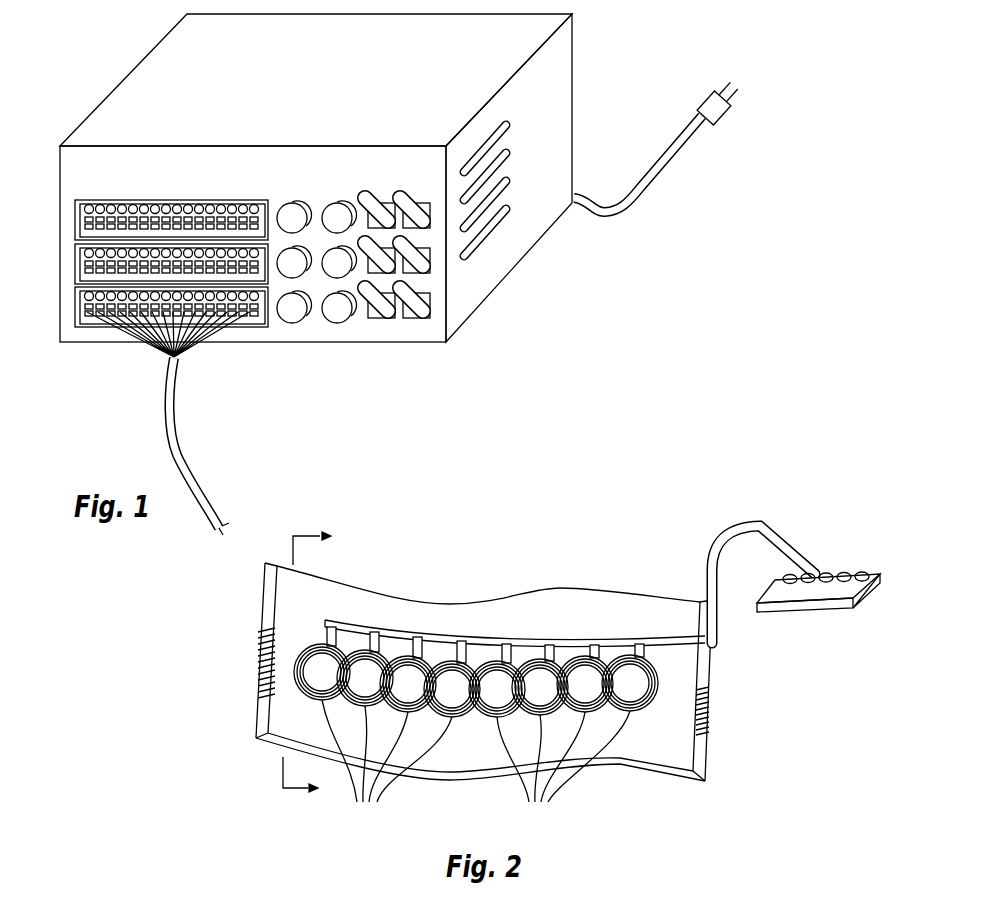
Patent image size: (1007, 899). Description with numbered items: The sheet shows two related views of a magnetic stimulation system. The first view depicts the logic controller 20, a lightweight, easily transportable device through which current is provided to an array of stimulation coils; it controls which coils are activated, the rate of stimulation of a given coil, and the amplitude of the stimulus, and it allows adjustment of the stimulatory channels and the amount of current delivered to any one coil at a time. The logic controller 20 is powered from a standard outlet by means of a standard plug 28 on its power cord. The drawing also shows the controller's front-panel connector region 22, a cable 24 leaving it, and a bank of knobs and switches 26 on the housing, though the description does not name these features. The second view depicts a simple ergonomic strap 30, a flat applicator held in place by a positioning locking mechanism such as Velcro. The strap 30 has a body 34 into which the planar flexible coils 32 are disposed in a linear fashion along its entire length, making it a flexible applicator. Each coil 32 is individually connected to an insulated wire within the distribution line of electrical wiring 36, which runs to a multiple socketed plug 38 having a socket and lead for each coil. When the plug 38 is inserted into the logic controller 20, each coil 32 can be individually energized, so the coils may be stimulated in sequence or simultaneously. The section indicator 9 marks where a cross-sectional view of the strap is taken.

In FIG. 1, the logic controller 20 is at (584, 88).
In FIG. 1, the connector panel 22 is at (120, 352).
In FIG. 1, the cable 24 is at (182, 472).
In FIG. 1, the control knobs and switches 26 is at (381, 308).
In FIG. 1, the standard plug 28 is at (653, 172).
In FIG. 2, the simple ergonomic strap 30 is at (652, 790).
In FIG. 2, the planar flexible coils 32 is at (476, 740).
In FIG. 2, the body 34 is at (710, 690).
In FIG. 2, the electrical wiring 36 is at (726, 547).
In FIG. 2, the multiple socketed plug 38 is at (845, 576).
In FIG. 2, the section view indicator 9 is at (314, 668).